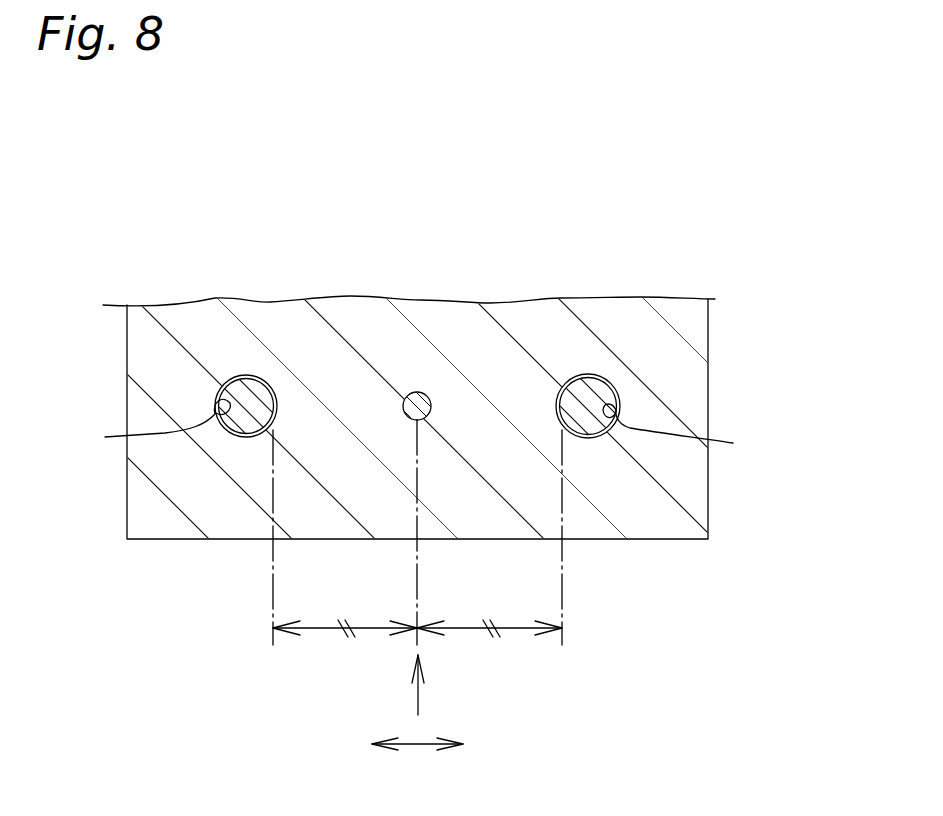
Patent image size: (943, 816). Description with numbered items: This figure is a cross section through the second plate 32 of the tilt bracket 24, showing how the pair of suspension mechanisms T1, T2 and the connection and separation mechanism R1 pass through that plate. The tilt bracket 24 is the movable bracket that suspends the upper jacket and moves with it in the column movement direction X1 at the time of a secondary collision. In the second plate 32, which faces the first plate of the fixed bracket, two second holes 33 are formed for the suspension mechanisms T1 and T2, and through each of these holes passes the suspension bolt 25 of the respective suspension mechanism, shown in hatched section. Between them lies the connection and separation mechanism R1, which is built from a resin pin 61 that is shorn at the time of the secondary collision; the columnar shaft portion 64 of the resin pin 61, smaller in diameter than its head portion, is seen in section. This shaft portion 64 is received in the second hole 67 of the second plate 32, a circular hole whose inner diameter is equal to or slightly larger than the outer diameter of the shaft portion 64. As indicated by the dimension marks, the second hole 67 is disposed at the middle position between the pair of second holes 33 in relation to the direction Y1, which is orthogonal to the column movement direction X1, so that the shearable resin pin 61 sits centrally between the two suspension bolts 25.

The tilt bracket 24 is at (710, 390).
The suspension bolt 25 is at (255, 400).
The second plate 32 is at (696, 327).
The second hole 33 is at (104, 453).
The resin pin 61 is at (428, 394).
The shaft portion 64 is at (417, 406).
The second hole 67 is at (404, 421).
The suspension mechanism T1 is at (229, 372).
The suspension mechanism T2 is at (571, 376).
The connection and separation mechanism R1 is at (404, 393).
The column movement direction X1 is at (420, 690).
The direction orthogonal to the column movement direction Y1 is at (418, 746).